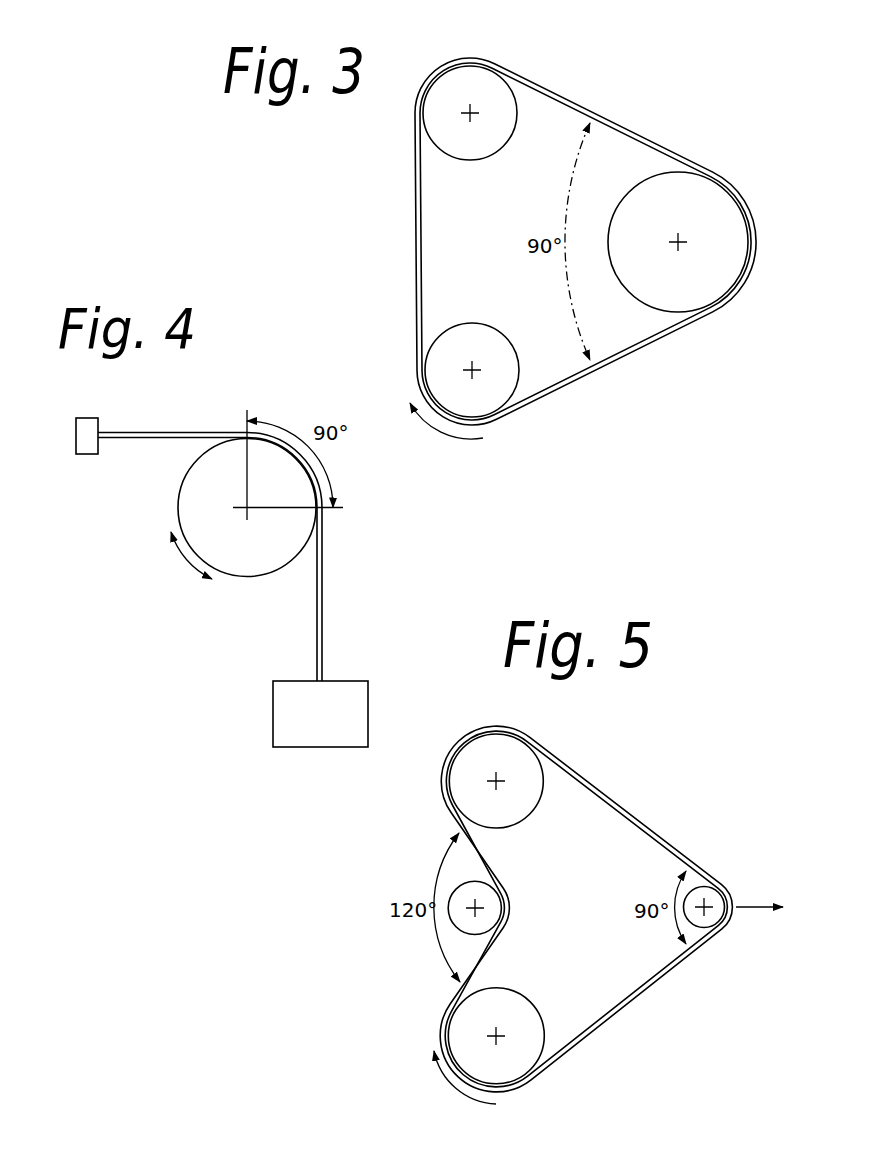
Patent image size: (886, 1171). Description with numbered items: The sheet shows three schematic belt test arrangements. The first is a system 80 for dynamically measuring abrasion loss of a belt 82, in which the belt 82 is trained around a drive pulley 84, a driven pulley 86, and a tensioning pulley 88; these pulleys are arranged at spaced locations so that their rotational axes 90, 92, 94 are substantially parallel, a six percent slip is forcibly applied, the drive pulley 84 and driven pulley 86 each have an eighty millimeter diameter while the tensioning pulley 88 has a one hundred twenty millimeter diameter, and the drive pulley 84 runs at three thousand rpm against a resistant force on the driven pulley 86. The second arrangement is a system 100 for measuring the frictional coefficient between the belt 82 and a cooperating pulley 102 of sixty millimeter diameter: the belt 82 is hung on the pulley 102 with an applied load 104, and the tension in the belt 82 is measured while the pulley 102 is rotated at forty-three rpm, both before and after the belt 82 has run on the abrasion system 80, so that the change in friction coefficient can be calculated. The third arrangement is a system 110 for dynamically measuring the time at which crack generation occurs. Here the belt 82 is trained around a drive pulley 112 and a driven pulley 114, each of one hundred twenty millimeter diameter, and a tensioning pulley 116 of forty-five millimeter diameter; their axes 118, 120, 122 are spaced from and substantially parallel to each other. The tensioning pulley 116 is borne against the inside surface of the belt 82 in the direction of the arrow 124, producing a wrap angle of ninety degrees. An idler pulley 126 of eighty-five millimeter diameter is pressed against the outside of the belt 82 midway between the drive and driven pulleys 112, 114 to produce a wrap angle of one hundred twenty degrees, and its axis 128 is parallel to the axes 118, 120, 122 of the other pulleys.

In FIG. 3, the system 80 is at (723, 145).
In FIG. 3, the belt 82 is at (567, 98).
In FIG. 4, the belt 82 is at (322, 591).
In FIG. 5, the belt 82 is at (650, 830).
In FIG. 3, the drive pulley 84 is at (445, 348).
In FIG. 3, the driven pulley 86 is at (443, 130).
In FIG. 3, the tensioning pulley 88 is at (725, 237).
In FIG. 3, the rotational axis 90 is at (474, 368).
In FIG. 3, the rotational axis 92 is at (473, 108).
In FIG. 3, the rotational axis 94 is at (675, 238).
In FIG. 4, the system 100 is at (370, 511).
In FIG. 4, the pulley 102 is at (190, 511).
In FIG. 4, the load 104 is at (306, 737).
In FIG. 5, the system 110 is at (686, 741).
In FIG. 5, the drive pulley 112 is at (455, 1036).
In FIG. 5, the driven pulley 114 is at (463, 775).
In FIG. 5, the tensioning pulley 116 is at (710, 897).
In FIG. 5, the axis 118 is at (498, 1034).
In FIG. 5, the axis 120 is at (500, 779).
In FIG. 5, the axis 122 is at (696, 912).
In FIG. 5, the arrow 124 is at (746, 913).
In FIG. 5, the idler pulley 126 is at (486, 895).
In FIG. 5, the axis 128 is at (475, 908).